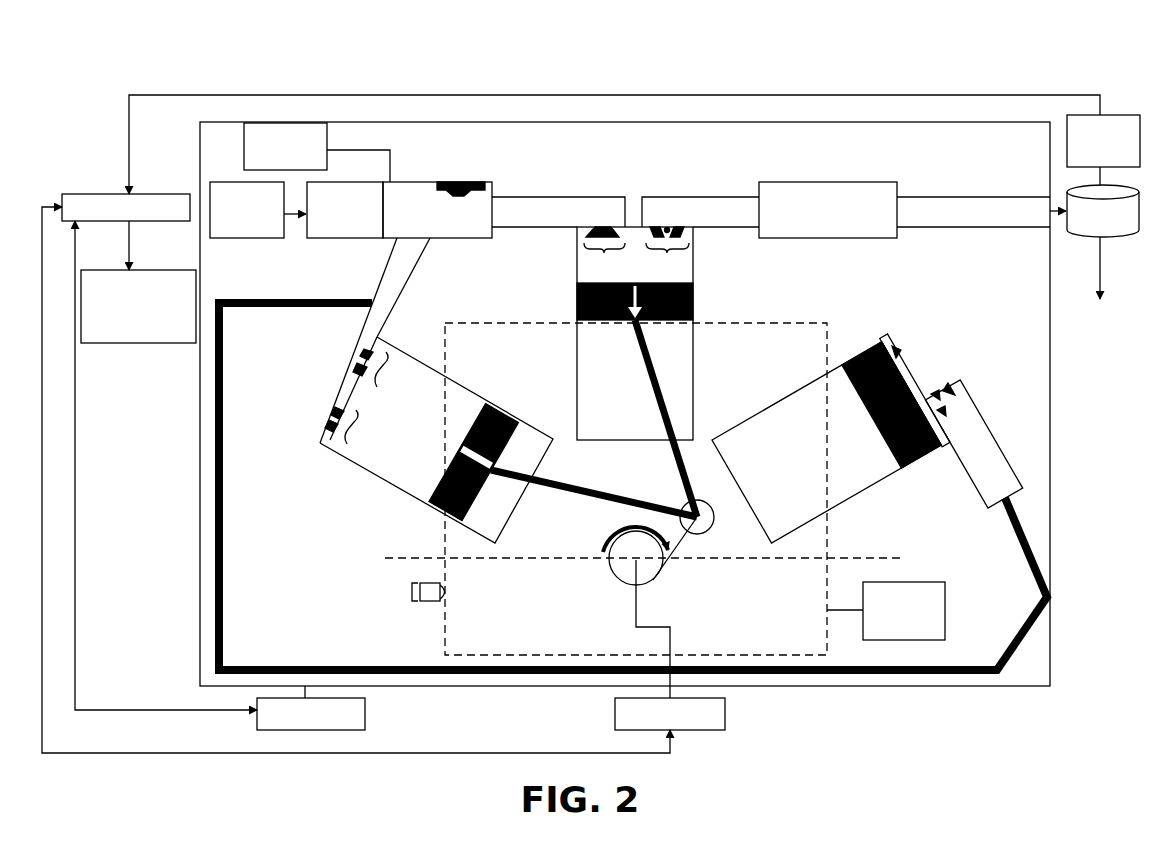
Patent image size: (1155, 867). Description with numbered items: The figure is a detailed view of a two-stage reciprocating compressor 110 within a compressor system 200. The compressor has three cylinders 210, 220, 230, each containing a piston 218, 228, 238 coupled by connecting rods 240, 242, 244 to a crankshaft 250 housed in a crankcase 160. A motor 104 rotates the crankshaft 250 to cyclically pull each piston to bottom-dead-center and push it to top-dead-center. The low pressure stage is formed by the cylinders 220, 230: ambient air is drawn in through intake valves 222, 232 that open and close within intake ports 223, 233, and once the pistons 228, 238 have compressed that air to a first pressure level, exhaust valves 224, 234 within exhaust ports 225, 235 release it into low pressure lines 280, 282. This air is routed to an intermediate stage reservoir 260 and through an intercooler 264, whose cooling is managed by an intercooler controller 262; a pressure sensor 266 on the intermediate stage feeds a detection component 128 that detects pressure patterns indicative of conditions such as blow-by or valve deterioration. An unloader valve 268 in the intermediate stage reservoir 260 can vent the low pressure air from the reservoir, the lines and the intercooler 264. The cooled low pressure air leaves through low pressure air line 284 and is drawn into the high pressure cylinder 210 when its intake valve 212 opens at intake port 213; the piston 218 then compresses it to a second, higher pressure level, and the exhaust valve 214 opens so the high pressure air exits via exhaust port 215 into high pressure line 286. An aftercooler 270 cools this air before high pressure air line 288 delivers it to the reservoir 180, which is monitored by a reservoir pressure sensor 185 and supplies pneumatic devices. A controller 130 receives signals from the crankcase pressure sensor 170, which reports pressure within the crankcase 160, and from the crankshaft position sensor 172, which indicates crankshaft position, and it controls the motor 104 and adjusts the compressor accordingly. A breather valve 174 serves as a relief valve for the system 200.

The system 200 is at (1036, 59).
The compressor 110 is at (878, 126).
The controller 130 is at (104, 193).
The detection component 128 is at (150, 269).
The pressure sensor 266 is at (281, 122).
The intercooler controller 262 is at (222, 182).
The intercooler 264 is at (343, 239).
The intermediate stage reservoir 260 is at (438, 239).
The unloader valve 268 is at (460, 181).
The low pressure air line 284 is at (538, 203).
The high pressure line 286 is at (731, 200).
The cylinder 210 is at (604, 406).
The intake valve 212 is at (590, 224).
The intake port 213 is at (604, 259).
The exhaust valve 214 is at (660, 224).
The exhaust port 215 is at (667, 259).
The piston 218 is at (577, 306).
The connecting rod 240 is at (704, 440).
The crankcase 160 is at (778, 318).
The crankshaft 250 is at (622, 573).
The connecting rod 244 is at (718, 512).
The connecting rod 242 is at (557, 487).
The cylinder 230 is at (392, 463).
The low pressure line 282 is at (371, 296).
The exhaust valve 234 is at (356, 378).
The exhaust port 235 is at (399, 372).
The intake valve 232 is at (330, 418).
The intake port 233 is at (373, 428).
The piston 238 is at (453, 519).
The cylinder 220 is at (853, 473).
The piston 228 is at (908, 458).
The intake valve 222 is at (904, 357).
The intake port 223 is at (885, 340).
The exhaust valve 224 is at (958, 382).
The exhaust port 225 is at (945, 457).
The low pressure line 280 is at (1030, 546).
The aftercooler 270 is at (855, 190).
The high pressure air line 288 is at (980, 203).
The reservoir pressure sensor 185 is at (1117, 113).
The reservoir 180 is at (1074, 236).
The crankcase pressure sensor 170 is at (898, 642).
The breather valve 174 is at (410, 592).
The motor 104 is at (366, 716).
The crankshaft position sensor 172 is at (726, 718).